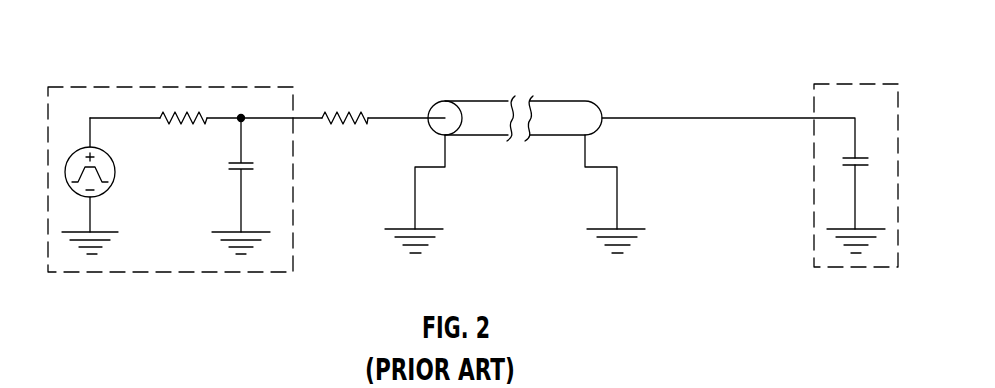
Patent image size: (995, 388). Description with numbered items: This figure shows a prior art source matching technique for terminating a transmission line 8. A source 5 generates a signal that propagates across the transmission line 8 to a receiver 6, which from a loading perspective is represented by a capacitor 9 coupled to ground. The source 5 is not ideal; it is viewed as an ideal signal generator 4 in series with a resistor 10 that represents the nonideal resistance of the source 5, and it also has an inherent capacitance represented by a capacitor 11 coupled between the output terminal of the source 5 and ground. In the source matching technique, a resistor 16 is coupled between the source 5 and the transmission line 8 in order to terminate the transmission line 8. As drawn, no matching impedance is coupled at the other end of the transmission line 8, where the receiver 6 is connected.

The ideal signal generator 4 is at (68, 158).
The source 5 is at (177, 272).
The receiver 6 is at (837, 267).
The transmission line 8 is at (553, 101).
The capacitor 9 is at (860, 158).
The resistor 10 is at (164, 113).
The capacitor 11 is at (250, 162).
The resistor 16 is at (352, 111).